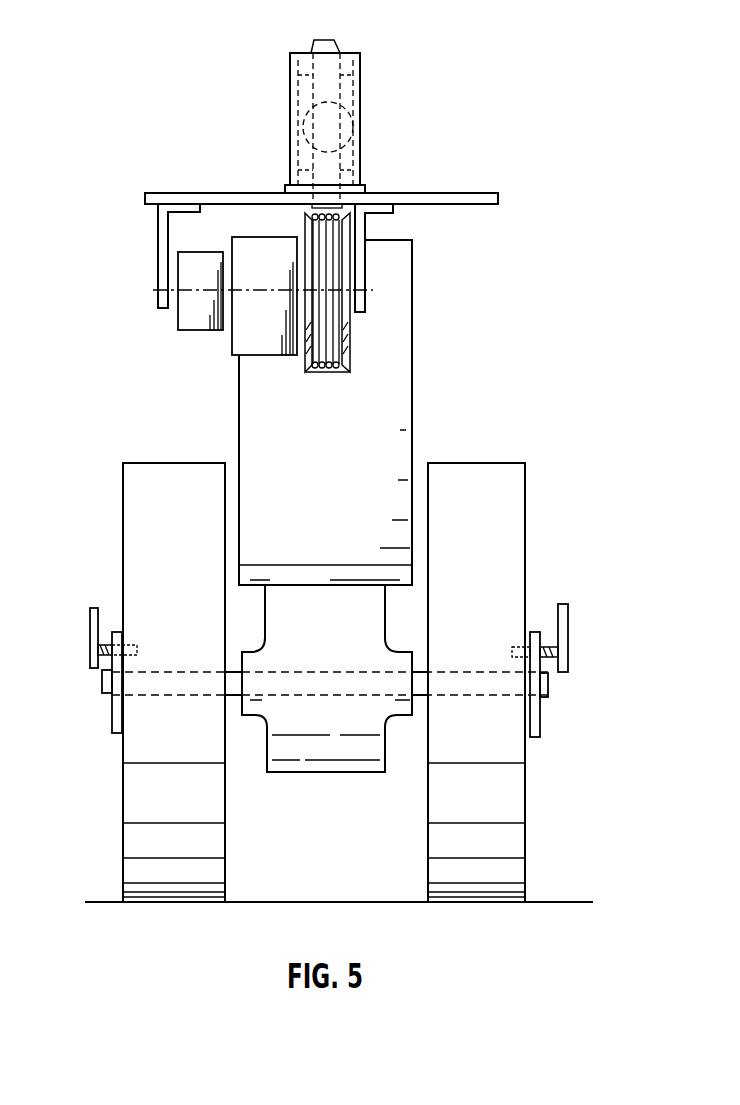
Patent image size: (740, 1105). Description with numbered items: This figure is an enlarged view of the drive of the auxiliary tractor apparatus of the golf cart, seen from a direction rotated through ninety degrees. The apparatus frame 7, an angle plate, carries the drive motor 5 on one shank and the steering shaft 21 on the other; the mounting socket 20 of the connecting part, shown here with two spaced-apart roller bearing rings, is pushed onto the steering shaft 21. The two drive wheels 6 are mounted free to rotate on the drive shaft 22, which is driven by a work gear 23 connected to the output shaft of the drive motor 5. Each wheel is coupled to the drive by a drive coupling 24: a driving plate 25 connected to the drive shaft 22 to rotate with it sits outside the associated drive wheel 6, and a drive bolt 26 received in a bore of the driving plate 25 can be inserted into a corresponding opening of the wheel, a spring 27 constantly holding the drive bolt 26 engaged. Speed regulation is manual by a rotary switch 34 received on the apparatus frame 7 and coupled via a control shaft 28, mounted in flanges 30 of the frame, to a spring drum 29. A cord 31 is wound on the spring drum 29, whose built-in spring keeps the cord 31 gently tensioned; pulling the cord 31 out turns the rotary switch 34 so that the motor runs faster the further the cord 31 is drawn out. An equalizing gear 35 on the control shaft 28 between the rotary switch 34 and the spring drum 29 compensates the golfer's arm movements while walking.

The drive motor 5 is at (395, 415).
The drive wheels 6 is at (137, 785).
The apparatus frame 7 is at (445, 198).
The mounting socket 20 is at (302, 88).
The steering shaft 21 is at (333, 47).
The drive shaft 22 is at (237, 694).
The work gear 23 is at (348, 753).
The drive coupling 24 is at (85, 649).
The driving plate 25 is at (117, 725).
The drive bolt 26 is at (92, 623).
The spring 27 is at (108, 645).
The control shaft 28 is at (370, 292).
The spring drum 29 is at (345, 335).
The flanges 30 is at (162, 242).
The cord 31 is at (337, 372).
The rotary switch 34 is at (190, 330).
The equalizing gear 35 is at (245, 340).